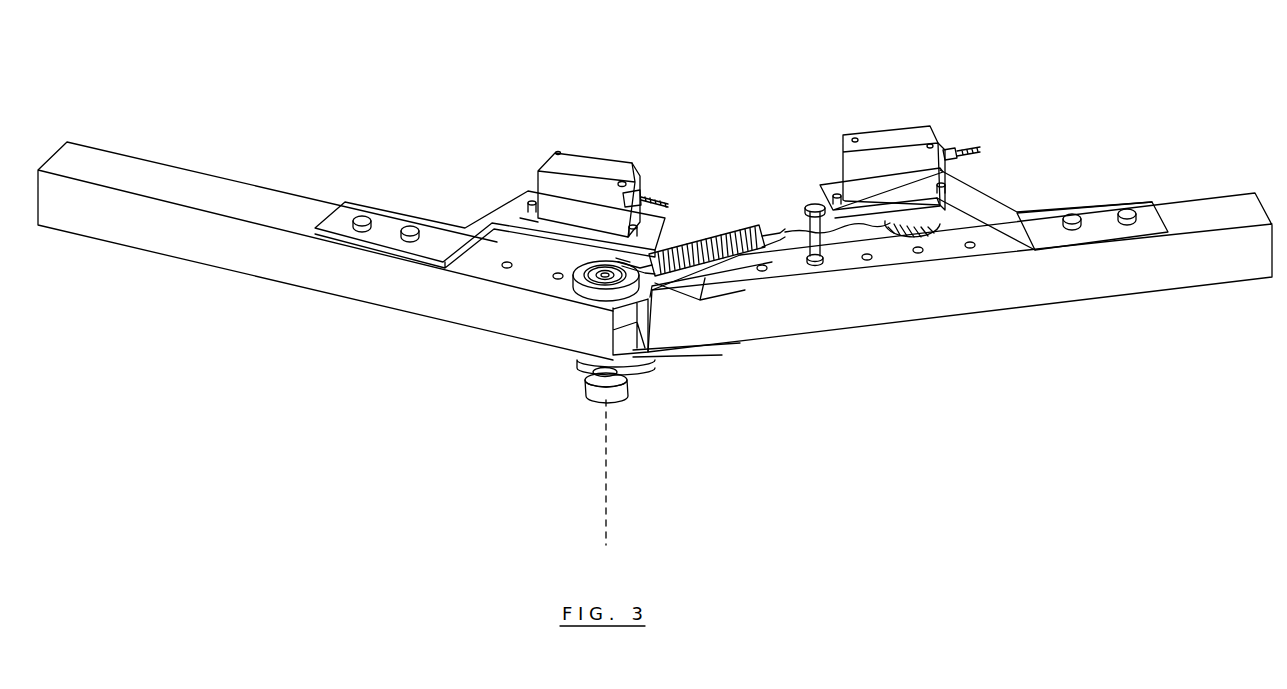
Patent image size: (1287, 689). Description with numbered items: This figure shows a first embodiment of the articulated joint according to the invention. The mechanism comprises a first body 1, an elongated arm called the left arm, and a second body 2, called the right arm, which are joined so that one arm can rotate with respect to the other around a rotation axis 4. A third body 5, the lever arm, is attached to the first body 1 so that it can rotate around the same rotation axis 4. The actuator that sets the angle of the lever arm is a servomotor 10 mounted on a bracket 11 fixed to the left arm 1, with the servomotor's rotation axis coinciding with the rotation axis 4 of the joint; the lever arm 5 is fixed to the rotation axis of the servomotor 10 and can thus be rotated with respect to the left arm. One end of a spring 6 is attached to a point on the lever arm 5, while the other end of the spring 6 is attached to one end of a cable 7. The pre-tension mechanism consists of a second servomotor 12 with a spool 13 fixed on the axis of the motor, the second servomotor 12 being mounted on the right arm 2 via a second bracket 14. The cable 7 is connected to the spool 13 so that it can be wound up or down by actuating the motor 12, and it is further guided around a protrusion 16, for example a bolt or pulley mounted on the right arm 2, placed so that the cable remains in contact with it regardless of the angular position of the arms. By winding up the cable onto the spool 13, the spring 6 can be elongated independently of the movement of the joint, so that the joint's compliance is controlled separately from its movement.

The first body 1 is at (173, 183).
The second body 2 is at (1188, 212).
The rotation axis 4 is at (593, 283).
The third body 5 is at (637, 262).
The spring 6 is at (700, 273).
The cable 7 is at (850, 218).
The servomotor 10 is at (570, 186).
The bracket 11 is at (500, 213).
The second servomotor 12 is at (898, 163).
The spool 13 is at (925, 235).
The second bracket 14 is at (1032, 230).
The protrusion 16 is at (812, 268).